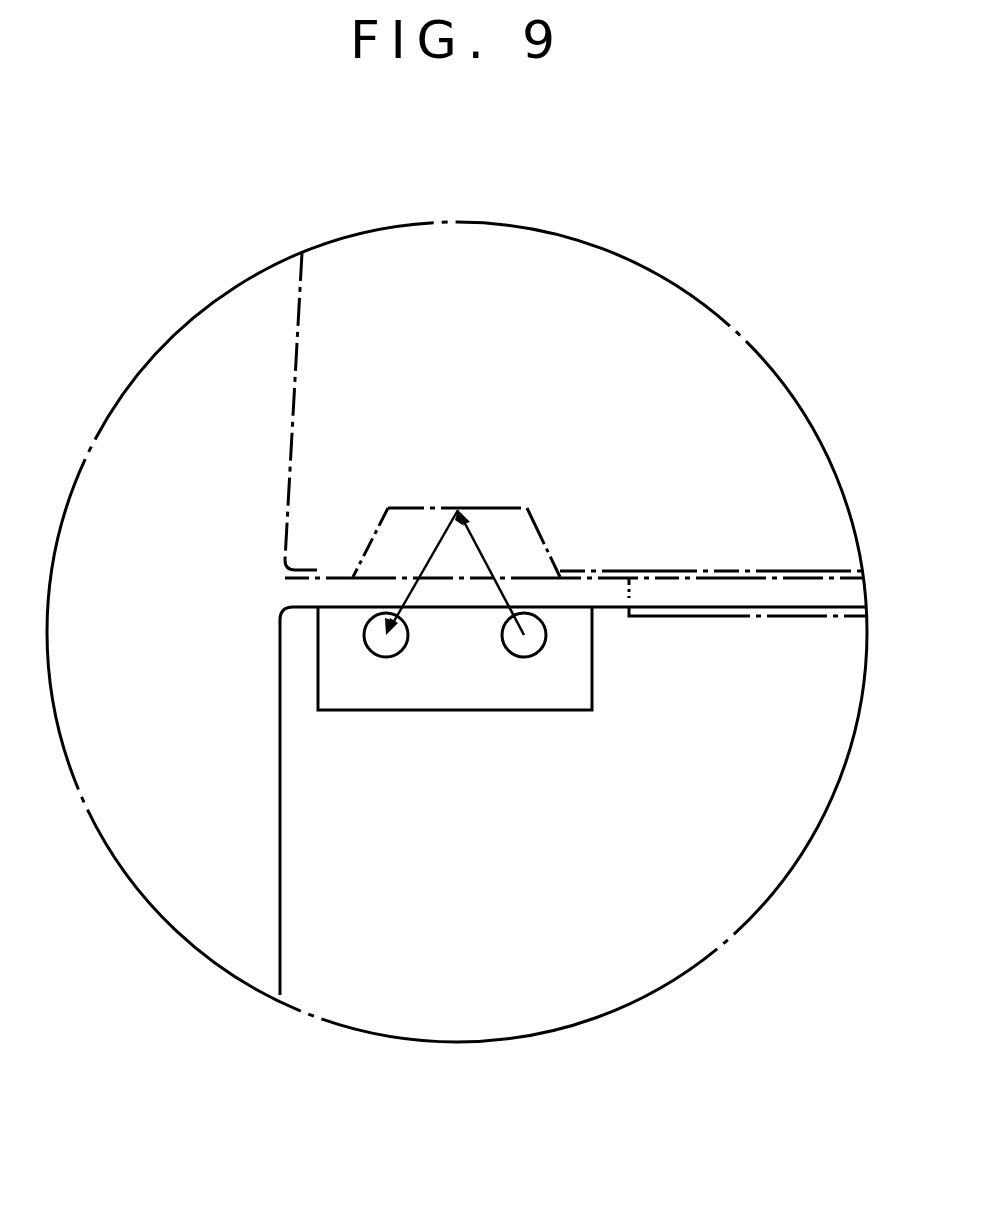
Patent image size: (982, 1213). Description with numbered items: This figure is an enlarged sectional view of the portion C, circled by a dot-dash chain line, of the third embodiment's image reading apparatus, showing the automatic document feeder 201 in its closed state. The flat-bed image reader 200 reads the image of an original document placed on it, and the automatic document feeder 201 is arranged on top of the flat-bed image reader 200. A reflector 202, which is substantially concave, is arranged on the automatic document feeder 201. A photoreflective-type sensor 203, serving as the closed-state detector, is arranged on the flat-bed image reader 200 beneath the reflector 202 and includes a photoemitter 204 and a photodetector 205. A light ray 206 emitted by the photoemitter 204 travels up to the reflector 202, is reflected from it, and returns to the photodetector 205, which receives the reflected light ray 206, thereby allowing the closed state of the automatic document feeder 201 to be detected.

The portion C is at (713, 307).
The flat-bed image reader 200 is at (280, 885).
The automatic document feeder 201 is at (290, 403).
The reflector 202 is at (502, 508).
The photoreflective-type sensor 203 is at (508, 712).
The photoemitter 204 is at (547, 650).
The photodetector 205 is at (385, 657).
The light ray 206 is at (490, 560).